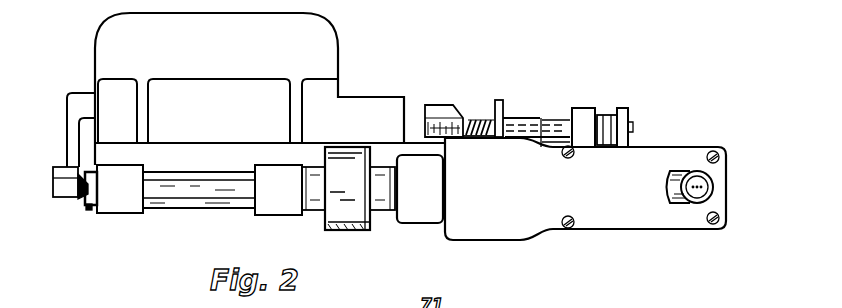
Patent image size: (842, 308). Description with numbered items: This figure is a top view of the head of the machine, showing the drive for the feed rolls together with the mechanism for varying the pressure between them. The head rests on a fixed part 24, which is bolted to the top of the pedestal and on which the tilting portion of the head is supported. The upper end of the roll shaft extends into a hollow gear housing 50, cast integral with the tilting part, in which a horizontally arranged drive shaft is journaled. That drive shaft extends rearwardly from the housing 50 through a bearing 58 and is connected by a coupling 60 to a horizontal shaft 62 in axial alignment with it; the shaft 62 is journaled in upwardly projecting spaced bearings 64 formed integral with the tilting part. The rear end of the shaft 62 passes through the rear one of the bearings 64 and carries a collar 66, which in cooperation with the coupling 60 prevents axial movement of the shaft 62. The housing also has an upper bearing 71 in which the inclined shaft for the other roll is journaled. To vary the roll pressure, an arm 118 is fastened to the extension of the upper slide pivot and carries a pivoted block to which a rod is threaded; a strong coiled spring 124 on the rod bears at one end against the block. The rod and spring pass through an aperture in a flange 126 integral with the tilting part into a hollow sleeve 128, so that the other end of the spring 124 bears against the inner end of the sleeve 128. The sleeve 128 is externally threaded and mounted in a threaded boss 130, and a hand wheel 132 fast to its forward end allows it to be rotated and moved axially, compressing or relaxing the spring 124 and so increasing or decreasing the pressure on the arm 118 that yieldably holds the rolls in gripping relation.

The fixed part 24 is at (330, 43).
The gear housing 50 is at (657, 220).
The bearing 58 is at (427, 215).
The coupling 60 is at (352, 226).
The horizontal shaft 62 is at (211, 197).
The bearings 64 is at (129, 207).
The collar 66 is at (88, 208).
The upper bearing 71 is at (693, 167).
The arm 118 is at (432, 108).
The coiled spring 124 is at (478, 120).
The flange 126 is at (505, 103).
The hollow sleeve 128 is at (557, 118).
The threaded boss 130 is at (583, 111).
The hand wheel 132 is at (630, 112).